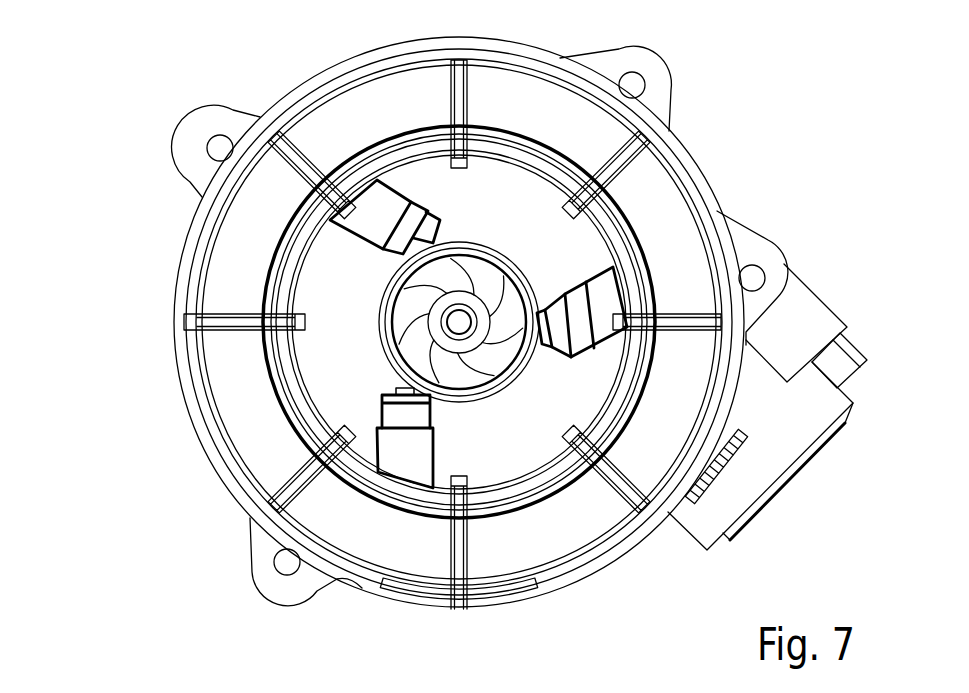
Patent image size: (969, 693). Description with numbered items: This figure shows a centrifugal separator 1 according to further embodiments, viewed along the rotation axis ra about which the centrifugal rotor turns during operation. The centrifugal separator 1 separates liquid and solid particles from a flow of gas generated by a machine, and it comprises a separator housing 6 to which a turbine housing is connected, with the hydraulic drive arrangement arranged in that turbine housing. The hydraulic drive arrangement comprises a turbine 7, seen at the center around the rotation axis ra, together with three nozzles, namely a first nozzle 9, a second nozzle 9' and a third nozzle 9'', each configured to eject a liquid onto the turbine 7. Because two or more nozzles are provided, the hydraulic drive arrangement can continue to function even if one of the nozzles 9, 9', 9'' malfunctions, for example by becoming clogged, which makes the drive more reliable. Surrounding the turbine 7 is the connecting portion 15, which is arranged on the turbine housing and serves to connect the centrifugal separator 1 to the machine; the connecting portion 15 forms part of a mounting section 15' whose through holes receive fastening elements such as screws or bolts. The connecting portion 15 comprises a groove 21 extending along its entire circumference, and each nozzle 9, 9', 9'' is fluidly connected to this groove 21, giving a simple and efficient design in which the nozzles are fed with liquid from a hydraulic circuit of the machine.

The centrifugal separator 1 is at (143, 87).
The separator housing 6 is at (213, 460).
The turbine 7 is at (481, 369).
The first nozzle 9 is at (266, 228).
The second nozzle 9' is at (690, 262).
The third nozzle 9'' is at (261, 426).
The connecting portion 15 is at (433, 263).
The mounting section 15' is at (767, 308).
The groove 21 is at (280, 513).
The rotation axis ra is at (458, 322).